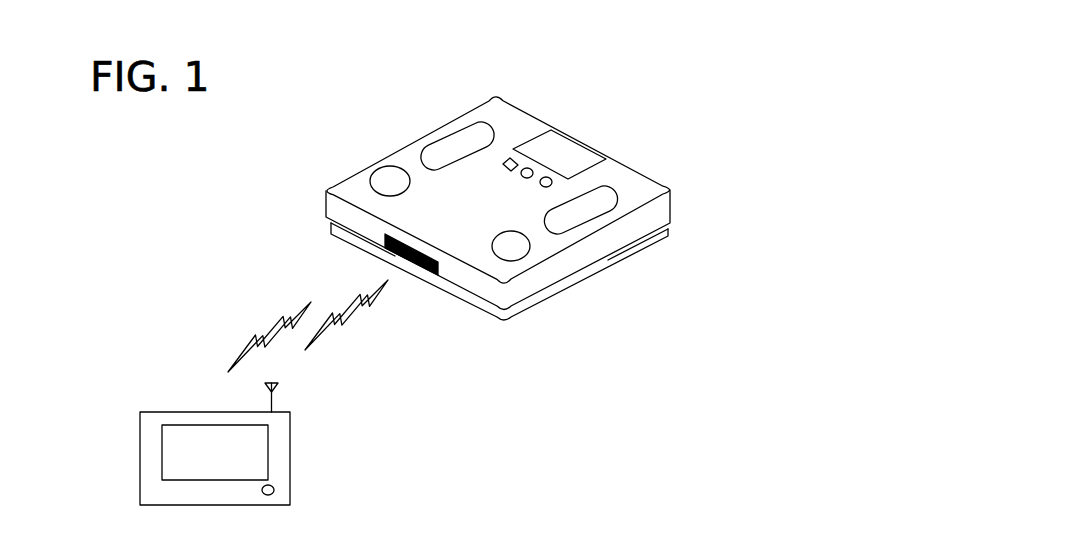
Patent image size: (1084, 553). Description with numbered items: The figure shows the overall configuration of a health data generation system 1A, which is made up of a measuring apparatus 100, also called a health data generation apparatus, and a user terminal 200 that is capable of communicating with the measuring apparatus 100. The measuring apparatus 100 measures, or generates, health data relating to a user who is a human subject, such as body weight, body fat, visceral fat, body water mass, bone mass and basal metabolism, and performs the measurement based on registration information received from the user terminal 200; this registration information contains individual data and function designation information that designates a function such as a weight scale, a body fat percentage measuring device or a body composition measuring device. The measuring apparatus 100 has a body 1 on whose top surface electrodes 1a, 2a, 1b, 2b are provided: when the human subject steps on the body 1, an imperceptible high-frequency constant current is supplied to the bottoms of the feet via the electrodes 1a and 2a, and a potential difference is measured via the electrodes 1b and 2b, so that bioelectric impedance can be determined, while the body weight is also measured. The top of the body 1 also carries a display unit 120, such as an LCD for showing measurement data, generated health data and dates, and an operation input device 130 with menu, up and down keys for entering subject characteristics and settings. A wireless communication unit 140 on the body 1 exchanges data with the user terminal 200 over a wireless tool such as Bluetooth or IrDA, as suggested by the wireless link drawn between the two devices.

The body 1 is at (643, 181).
The health data generation system 1A is at (813, 82).
The electrode 1a is at (446, 144).
The electrode 1b is at (392, 178).
The electrode 2a is at (583, 218).
The electrode 2b is at (519, 250).
The measuring apparatus 100 is at (675, 258).
The display unit 120 is at (571, 157).
The operation input device 130 is at (543, 178).
The wireless communication unit 140 is at (433, 271).
The user terminal 200 is at (326, 445).